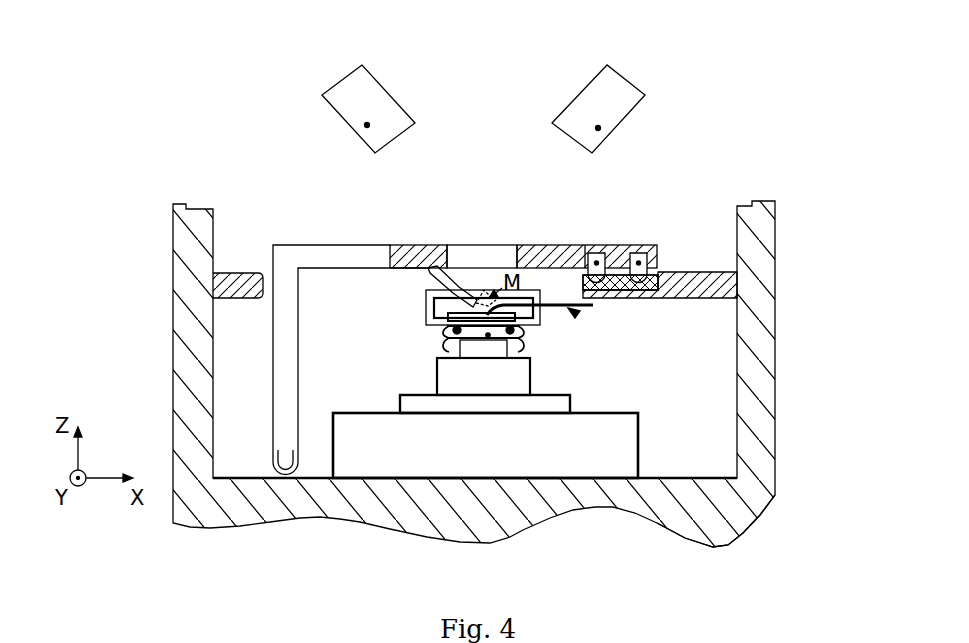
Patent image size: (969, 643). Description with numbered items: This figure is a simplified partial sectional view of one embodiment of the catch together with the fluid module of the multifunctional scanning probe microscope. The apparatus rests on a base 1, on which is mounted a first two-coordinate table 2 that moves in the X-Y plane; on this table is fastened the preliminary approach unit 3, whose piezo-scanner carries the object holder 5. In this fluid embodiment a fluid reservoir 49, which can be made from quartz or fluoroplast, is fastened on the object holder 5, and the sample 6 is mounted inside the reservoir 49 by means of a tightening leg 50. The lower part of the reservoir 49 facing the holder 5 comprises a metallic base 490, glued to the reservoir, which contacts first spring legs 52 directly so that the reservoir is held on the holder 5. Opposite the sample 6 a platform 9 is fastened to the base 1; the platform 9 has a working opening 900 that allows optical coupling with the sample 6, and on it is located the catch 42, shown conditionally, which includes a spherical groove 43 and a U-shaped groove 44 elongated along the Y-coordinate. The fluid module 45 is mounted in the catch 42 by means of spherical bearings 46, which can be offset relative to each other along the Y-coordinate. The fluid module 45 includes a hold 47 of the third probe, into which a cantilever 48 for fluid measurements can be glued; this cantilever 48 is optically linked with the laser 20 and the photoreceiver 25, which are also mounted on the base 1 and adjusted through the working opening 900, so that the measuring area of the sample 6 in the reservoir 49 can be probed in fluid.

The base 1 is at (555, 513).
The first two-coordinate table 2 is at (433, 439).
The preliminary approach unit 3 is at (478, 401).
The object holder 5 is at (473, 348).
The sample 6 is at (466, 311).
The platform 9 is at (706, 276).
The laser 20 is at (364, 124).
The photoreceiver 25 is at (601, 127).
The catch 42 is at (620, 298).
The spherical groove 43 is at (640, 283).
The U-shaped groove 44 is at (580, 316).
The fluid module 45 is at (289, 244).
The spherical bearings 46 is at (597, 261).
The hold of the third probe 47 is at (443, 264).
The cantilever for fluid measurements 48 is at (481, 298).
The fluid reservoir 49 is at (426, 302).
The tightening leg 50 is at (574, 313).
The first spring legs 52 is at (520, 346).
The metallic base 490 is at (491, 337).
The working opening 900 is at (495, 252).